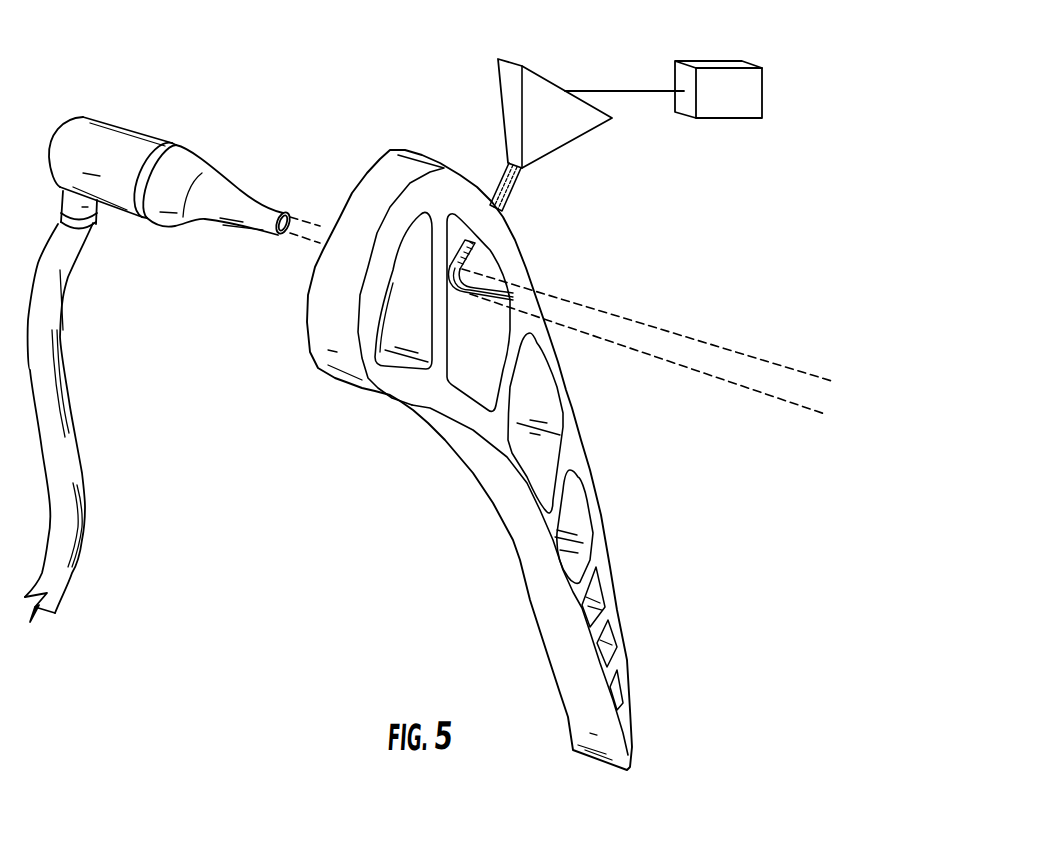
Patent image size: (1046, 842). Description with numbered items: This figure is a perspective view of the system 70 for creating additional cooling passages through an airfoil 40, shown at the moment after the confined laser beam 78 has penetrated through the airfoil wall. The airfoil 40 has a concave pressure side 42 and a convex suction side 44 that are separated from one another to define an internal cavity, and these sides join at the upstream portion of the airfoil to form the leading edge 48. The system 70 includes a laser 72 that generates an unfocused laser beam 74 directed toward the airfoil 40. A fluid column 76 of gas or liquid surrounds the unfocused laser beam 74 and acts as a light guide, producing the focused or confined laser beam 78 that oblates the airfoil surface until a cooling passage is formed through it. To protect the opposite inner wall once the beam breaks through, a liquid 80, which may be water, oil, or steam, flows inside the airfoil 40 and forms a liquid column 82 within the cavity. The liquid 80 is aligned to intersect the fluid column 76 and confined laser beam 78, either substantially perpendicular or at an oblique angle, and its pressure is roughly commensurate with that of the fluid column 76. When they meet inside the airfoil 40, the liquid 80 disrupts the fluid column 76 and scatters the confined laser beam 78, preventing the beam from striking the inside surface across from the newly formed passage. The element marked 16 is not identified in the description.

The sight window cutout 16 is at (517, 443).
The airfoil 40 is at (603, 505).
The pressure side 42 is at (574, 637).
The suction side 44 is at (607, 550).
The leading edge 48 is at (327, 296).
The system 70 is at (737, 619).
The laser 72 is at (738, 106).
The unfocused laser beam 74 is at (634, 88).
The fluid column 76 is at (508, 189).
The confined laser beam 78 is at (502, 181).
The liquid 80 is at (643, 353).
The liquid column 82 is at (711, 385).